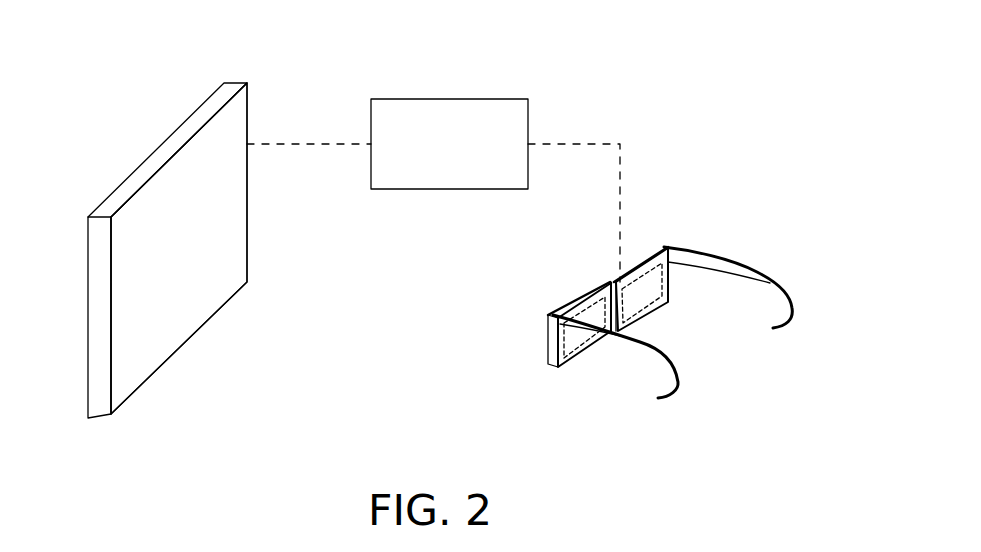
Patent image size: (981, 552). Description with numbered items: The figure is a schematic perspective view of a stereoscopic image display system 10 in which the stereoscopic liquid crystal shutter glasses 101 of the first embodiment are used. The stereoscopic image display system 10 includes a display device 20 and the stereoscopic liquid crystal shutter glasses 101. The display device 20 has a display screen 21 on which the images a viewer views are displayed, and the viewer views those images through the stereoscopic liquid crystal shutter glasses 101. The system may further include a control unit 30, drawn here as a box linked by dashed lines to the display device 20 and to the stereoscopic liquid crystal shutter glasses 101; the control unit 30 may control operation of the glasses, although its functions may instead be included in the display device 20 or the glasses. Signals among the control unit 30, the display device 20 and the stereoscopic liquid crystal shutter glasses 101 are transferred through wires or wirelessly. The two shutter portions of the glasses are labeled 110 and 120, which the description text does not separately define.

The stereoscopic image display system 10 is at (693, 115).
The display device 20 is at (158, 372).
The display screen 21 is at (187, 268).
The control unit 30 is at (450, 99).
The stereoscopic liquid crystal shutter glasses 101 is at (640, 275).
The left lens / shutter 110 is at (587, 298).
The right lens / shutter 120 is at (637, 256).